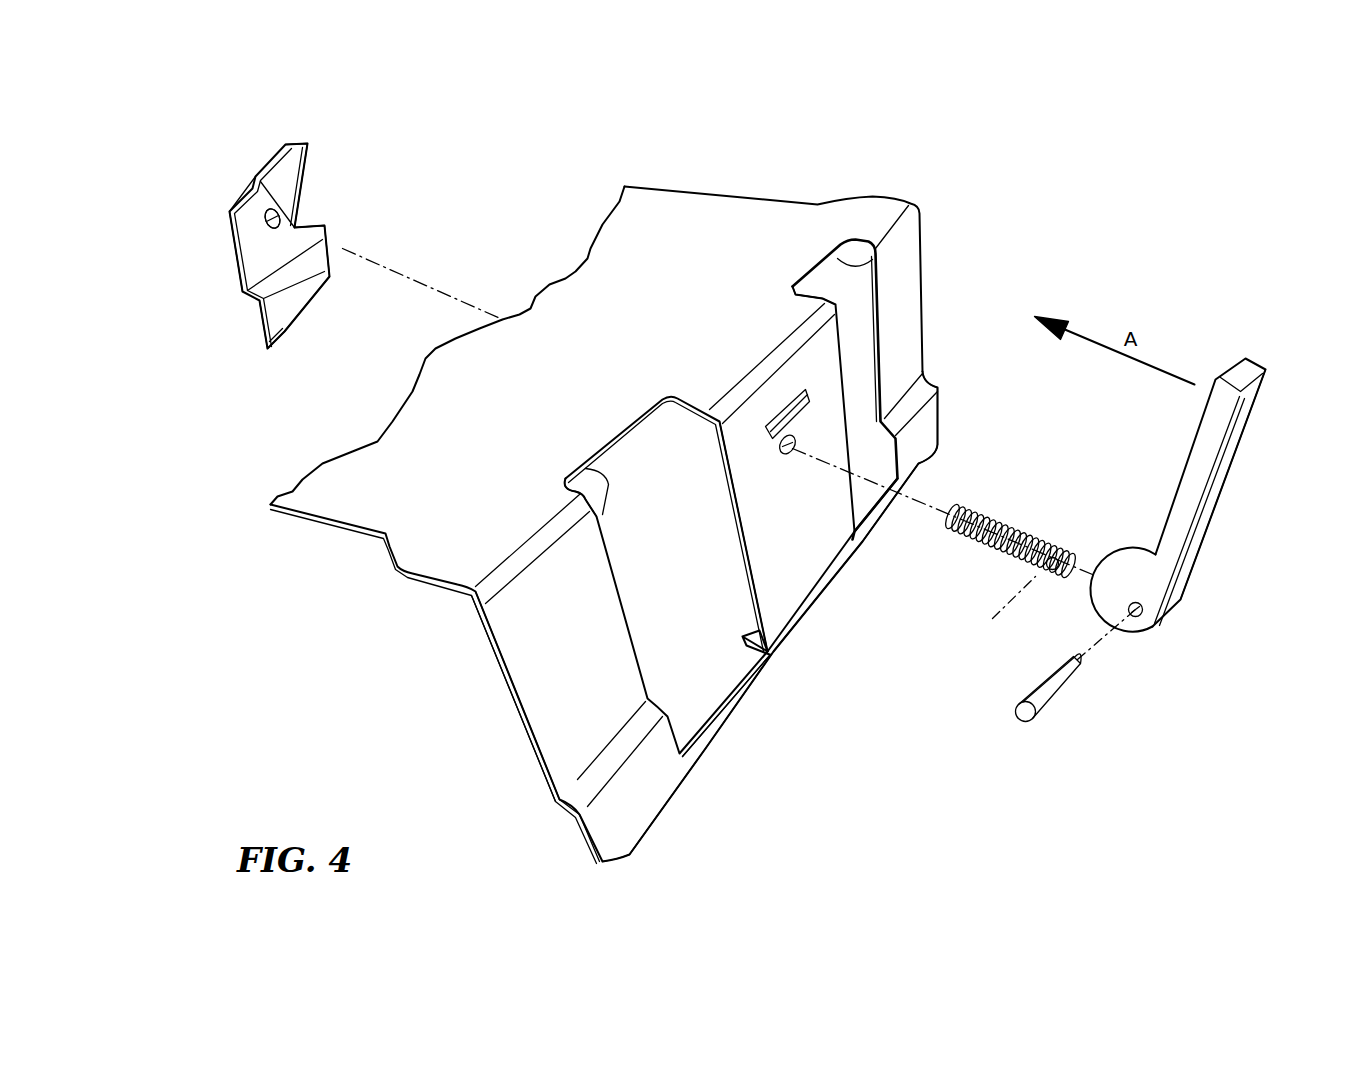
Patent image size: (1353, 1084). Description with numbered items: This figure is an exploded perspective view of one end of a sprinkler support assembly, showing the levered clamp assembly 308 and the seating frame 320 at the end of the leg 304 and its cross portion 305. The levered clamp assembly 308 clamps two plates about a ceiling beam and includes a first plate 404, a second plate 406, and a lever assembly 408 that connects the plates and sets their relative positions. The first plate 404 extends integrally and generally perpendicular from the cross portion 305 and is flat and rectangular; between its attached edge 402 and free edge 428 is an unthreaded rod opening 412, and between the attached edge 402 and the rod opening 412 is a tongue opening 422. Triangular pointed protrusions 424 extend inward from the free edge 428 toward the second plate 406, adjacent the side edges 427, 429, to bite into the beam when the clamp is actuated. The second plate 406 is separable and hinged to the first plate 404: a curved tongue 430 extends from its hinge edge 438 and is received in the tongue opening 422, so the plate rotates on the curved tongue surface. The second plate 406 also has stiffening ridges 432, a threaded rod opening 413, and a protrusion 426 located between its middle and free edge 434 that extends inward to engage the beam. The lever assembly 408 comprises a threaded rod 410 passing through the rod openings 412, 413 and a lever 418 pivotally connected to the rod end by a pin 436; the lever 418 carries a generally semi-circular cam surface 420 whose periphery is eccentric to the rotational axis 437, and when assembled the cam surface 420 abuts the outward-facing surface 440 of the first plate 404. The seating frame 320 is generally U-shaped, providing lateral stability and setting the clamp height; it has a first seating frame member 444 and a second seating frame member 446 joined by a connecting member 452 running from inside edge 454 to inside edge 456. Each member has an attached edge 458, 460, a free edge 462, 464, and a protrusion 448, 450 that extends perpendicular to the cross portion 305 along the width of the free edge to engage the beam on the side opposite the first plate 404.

The levered clamp assembly 308 is at (538, 132).
The leg 304 is at (667, 203).
The cross portion 305 is at (604, 618).
The attached edge 402 is at (790, 345).
The first plate 404 is at (750, 482).
The side edge 427 is at (740, 550).
The pointed protrusions 424 is at (747, 628).
The inside edge 454 is at (588, 470).
The attached edge 458 is at (540, 542).
The tongue opening 422 is at (775, 418).
The rod opening 412 is at (797, 457).
The inside edge 456 is at (827, 262).
The attached edge 460 is at (800, 273).
The second seating frame member 446 is at (908, 330).
The side edge 429 is at (843, 383).
The protrusion 450 is at (937, 383).
The free edge 464 is at (923, 463).
The outward-facing surface 440 is at (803, 550).
The free edge 428 is at (803, 617).
The connecting member 452 is at (747, 680).
The free edge 462 is at (627, 850).
The protrusion 448 is at (583, 793).
The seating frame 320 is at (552, 627).
The first seating frame member 444 is at (537, 683).
The threaded rod 410 is at (1003, 520).
The rotational axis 437 is at (1010, 598).
The lever assembly 408 is at (1232, 535).
The lever 418 is at (1187, 560).
The cam surface 420 is at (1108, 640).
The pin 436 is at (1053, 700).
The tongue 430 is at (281, 147).
The second plate 406 is at (302, 170).
The threaded rod opening 413 is at (277, 216).
The stiffening ridges 432 is at (327, 247).
The free edge 434 is at (303, 300).
The hinge edge 438 is at (235, 203).
The protrusion 426 is at (265, 343).